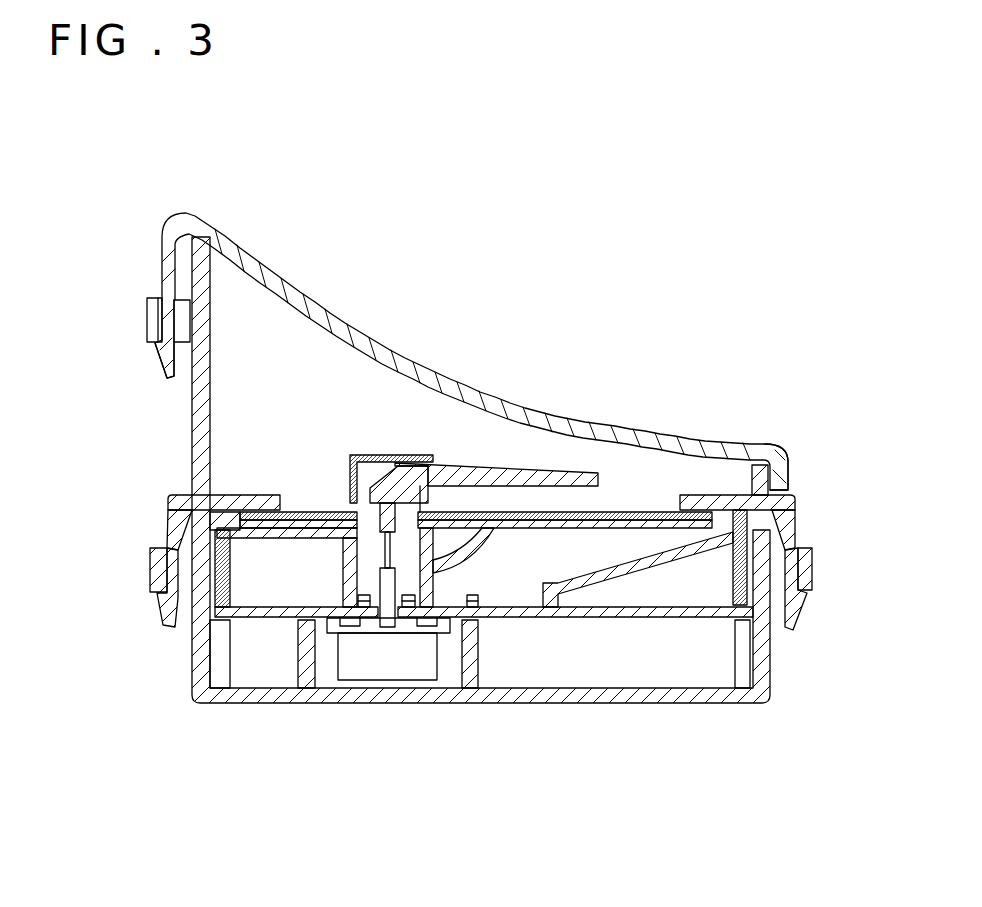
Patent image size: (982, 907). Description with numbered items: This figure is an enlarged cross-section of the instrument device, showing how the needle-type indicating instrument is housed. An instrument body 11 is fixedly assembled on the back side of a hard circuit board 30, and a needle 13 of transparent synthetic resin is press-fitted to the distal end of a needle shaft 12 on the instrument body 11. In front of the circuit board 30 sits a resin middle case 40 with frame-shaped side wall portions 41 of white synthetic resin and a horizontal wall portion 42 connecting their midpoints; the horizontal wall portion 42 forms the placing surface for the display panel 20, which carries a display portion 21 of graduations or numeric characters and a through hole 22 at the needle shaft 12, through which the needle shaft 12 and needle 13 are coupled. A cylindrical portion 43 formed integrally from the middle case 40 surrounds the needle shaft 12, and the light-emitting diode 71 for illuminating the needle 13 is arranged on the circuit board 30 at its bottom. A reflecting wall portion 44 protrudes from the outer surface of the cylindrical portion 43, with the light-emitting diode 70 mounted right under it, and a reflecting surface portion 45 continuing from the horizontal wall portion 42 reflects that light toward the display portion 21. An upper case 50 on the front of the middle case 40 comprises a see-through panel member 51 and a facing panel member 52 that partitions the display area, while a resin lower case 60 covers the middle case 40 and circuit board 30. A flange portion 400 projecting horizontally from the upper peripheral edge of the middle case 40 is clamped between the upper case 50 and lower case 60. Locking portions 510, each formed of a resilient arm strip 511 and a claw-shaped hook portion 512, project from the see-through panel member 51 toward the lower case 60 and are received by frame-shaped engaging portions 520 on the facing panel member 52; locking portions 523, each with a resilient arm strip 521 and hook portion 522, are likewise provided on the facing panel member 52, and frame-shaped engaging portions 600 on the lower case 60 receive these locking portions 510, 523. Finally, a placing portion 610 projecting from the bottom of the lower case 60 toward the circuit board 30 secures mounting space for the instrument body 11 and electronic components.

The instrument body 11 is at (367, 660).
The needle shaft 12 is at (380, 548).
The needle 13 is at (455, 465).
The display panel 20 is at (305, 512).
The display portion 21 is at (608, 512).
The through hole 22 is at (356, 503).
The circuit board 30 is at (577, 617).
The middle case 40 is at (489, 565).
The side wall portion 41 is at (225, 585).
The horizontal wall portion 42 is at (265, 538).
The cylindrical portion 43 is at (343, 580).
The reflecting wall portion 44 is at (472, 538).
The reflecting surface portion 45 is at (625, 562).
The upper case 50 is at (475, 352).
The see-through panel member 51 is at (592, 428).
The facing panel member 52 is at (740, 492).
The lower case 60 is at (597, 703).
The light-emitting diode 70 is at (478, 607).
The light-emitting diode 71 is at (408, 607).
The flange portion 400 is at (190, 508).
The locking portion 510 is at (135, 348).
The resilient arm strip 511 is at (168, 302).
The hook portion 512 is at (157, 350).
The frame-shaped engaging portion 520 is at (150, 320).
The resilient arm strip 521 is at (180, 548).
The hook portion 522 is at (163, 608).
The locking portion 523 is at (478, 604).
The frame-shaped engaging portion 600 is at (150, 566).
The placing portion 610 is at (220, 650).